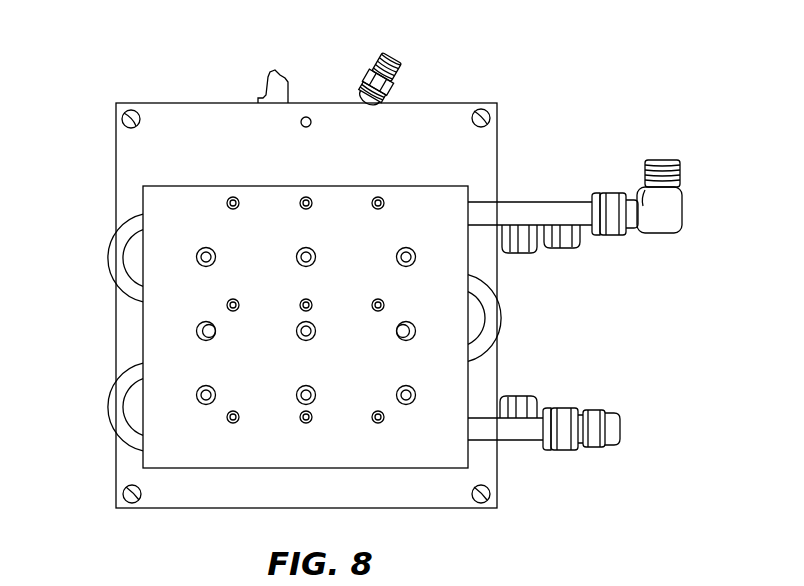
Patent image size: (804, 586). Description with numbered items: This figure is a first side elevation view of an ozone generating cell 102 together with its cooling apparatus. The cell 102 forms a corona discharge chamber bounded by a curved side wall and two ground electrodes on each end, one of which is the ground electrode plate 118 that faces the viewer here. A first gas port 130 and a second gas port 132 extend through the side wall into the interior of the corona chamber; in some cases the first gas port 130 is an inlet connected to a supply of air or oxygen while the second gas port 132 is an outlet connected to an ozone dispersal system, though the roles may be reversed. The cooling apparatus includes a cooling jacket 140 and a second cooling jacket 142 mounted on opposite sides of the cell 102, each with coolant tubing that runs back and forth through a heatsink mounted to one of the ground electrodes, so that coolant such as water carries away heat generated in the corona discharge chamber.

The ozone generating cell 102 is at (538, 275).
The ground electrode plate 118 is at (165, 148).
The first gas port 130 is at (398, 58).
The second gas port 132 is at (269, 68).
The cooling jacket 140 is at (522, 388).
The second cooling jacket 142 is at (139, 462).